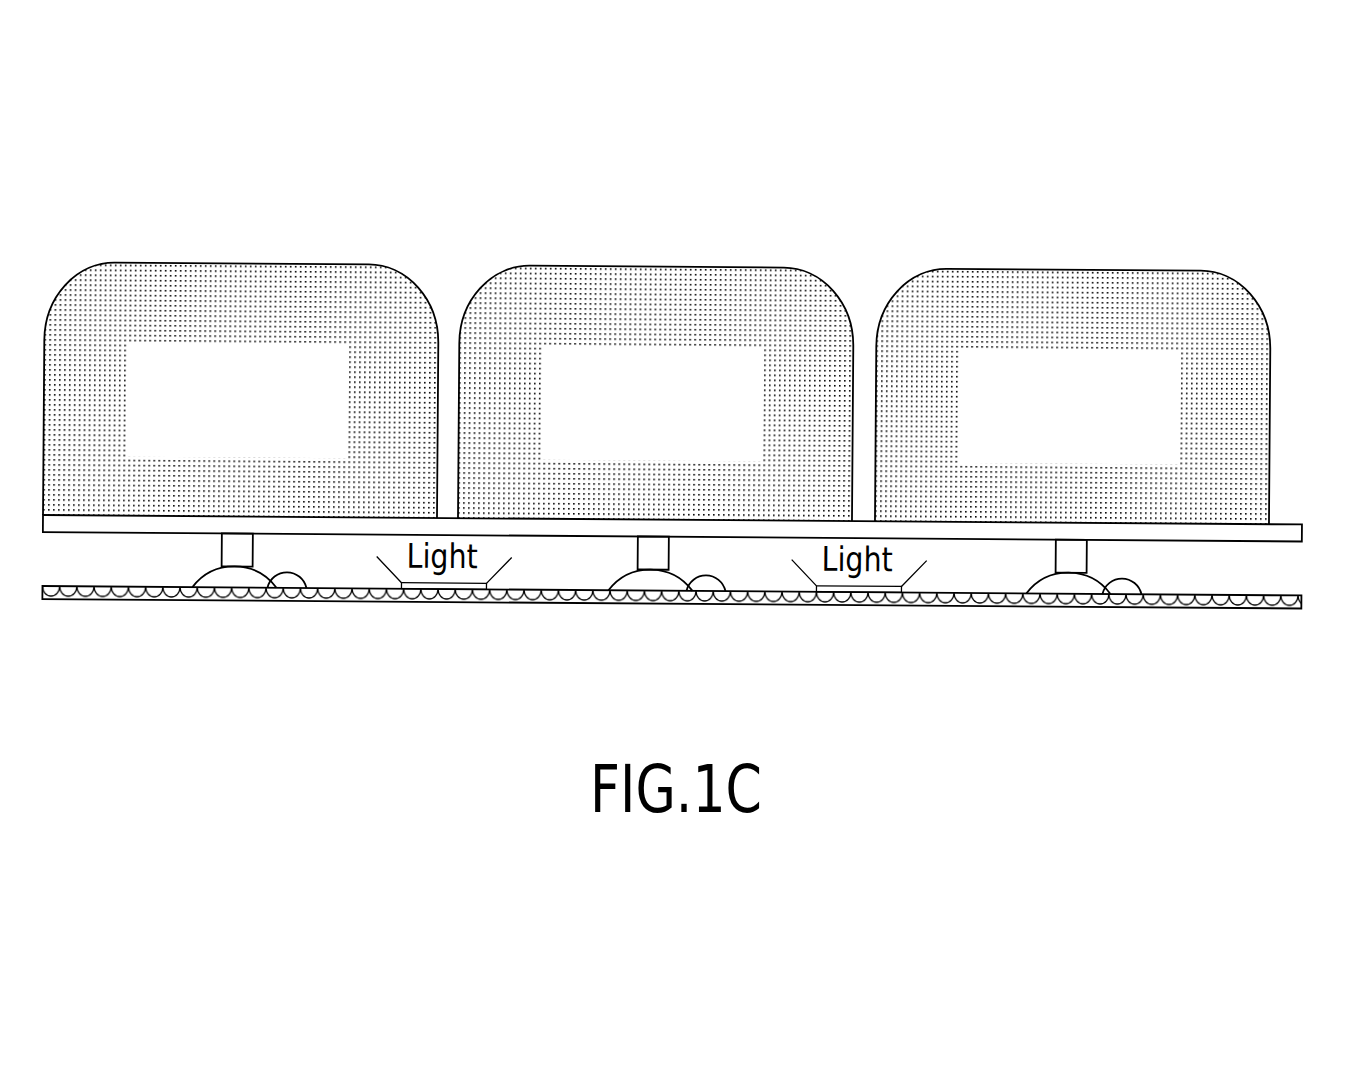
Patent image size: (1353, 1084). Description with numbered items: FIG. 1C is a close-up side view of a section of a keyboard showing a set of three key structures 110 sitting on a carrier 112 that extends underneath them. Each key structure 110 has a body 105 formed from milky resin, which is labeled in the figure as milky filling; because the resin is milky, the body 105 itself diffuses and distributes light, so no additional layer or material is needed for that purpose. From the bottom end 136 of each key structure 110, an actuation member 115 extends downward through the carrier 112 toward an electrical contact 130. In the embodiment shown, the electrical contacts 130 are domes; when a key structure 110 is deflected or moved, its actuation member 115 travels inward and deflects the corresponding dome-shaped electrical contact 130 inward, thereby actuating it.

The body 105 is at (1095, 443).
The key structure 110 is at (657, 359).
The carrier 112 is at (1302, 518).
The actuation member 115 is at (222, 547).
The electrical contact 130 is at (307, 586).
The bottom end 136 is at (542, 514).